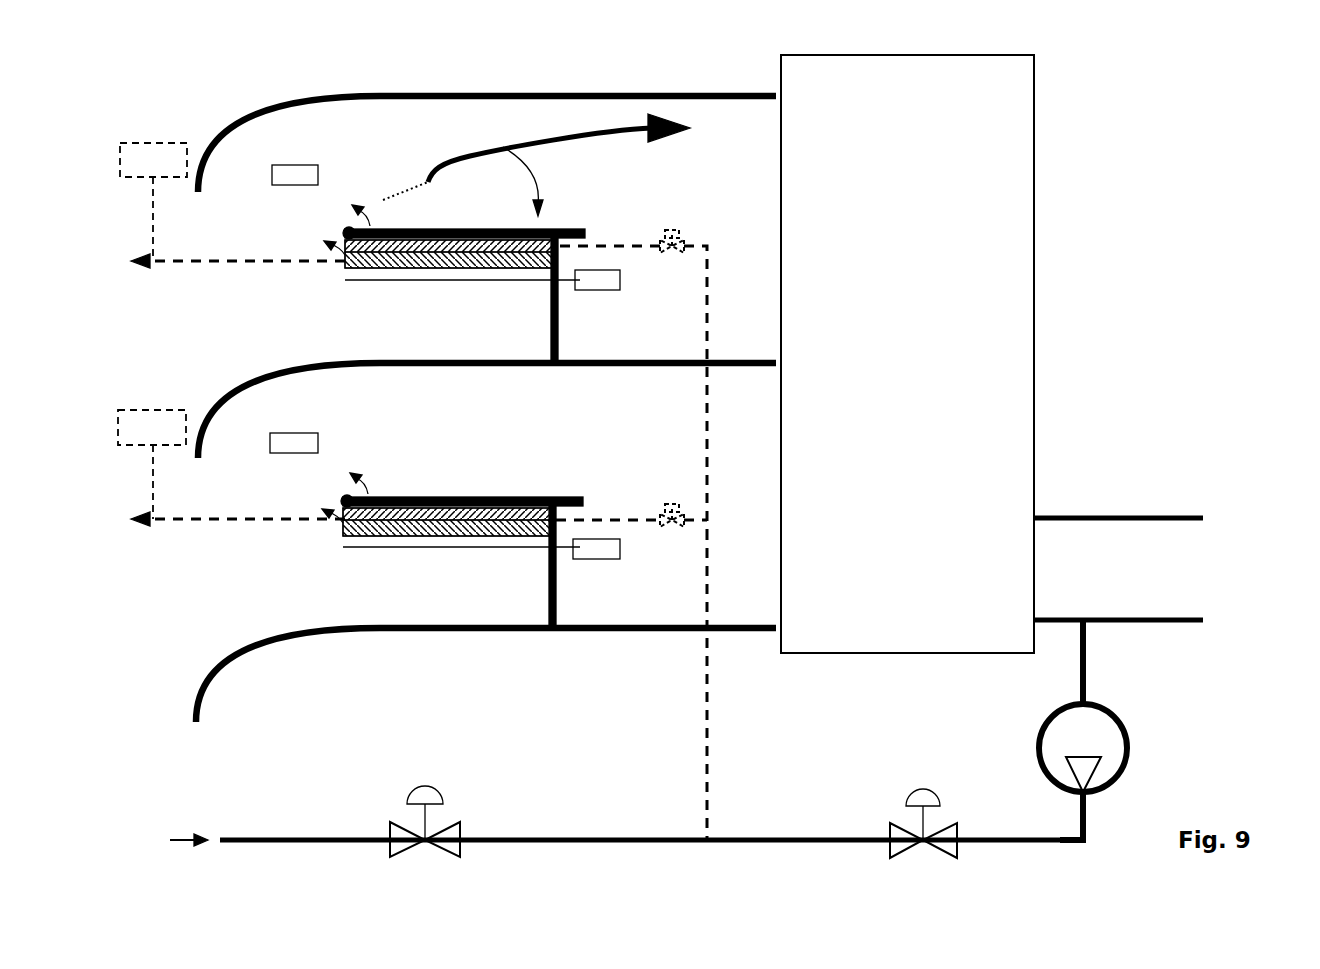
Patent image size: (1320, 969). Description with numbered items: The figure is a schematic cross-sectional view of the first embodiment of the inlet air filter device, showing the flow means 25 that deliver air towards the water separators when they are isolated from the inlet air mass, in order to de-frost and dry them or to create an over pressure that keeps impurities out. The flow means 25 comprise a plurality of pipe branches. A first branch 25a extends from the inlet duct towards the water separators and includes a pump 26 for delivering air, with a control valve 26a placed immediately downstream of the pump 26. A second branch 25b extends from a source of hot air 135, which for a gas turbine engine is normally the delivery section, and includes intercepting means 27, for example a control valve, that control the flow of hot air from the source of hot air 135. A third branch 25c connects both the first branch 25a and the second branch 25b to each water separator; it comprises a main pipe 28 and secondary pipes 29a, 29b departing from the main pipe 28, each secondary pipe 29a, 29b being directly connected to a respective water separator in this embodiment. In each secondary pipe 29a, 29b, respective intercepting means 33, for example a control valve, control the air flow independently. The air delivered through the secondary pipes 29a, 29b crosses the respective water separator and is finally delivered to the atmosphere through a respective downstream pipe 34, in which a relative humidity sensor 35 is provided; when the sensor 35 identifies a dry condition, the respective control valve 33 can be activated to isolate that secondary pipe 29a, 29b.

The flow means 25 is at (1098, 827).
The first branch 25a is at (1087, 675).
The second branch 25b is at (640, 842).
The third branch 25c is at (710, 655).
The pump 26 is at (1053, 710).
The control valve 26a is at (925, 845).
The intercepting means 27 is at (433, 793).
The main pipe 28 is at (710, 315).
The secondary pipe 29a is at (640, 246).
The secondary pipe 29b is at (620, 520).
The intercepting means 33 is at (675, 243).
The downstream pipe 34 is at (215, 263).
The relative humidity sensor 35 is at (165, 143).
The source of hot air 135 is at (198, 830).